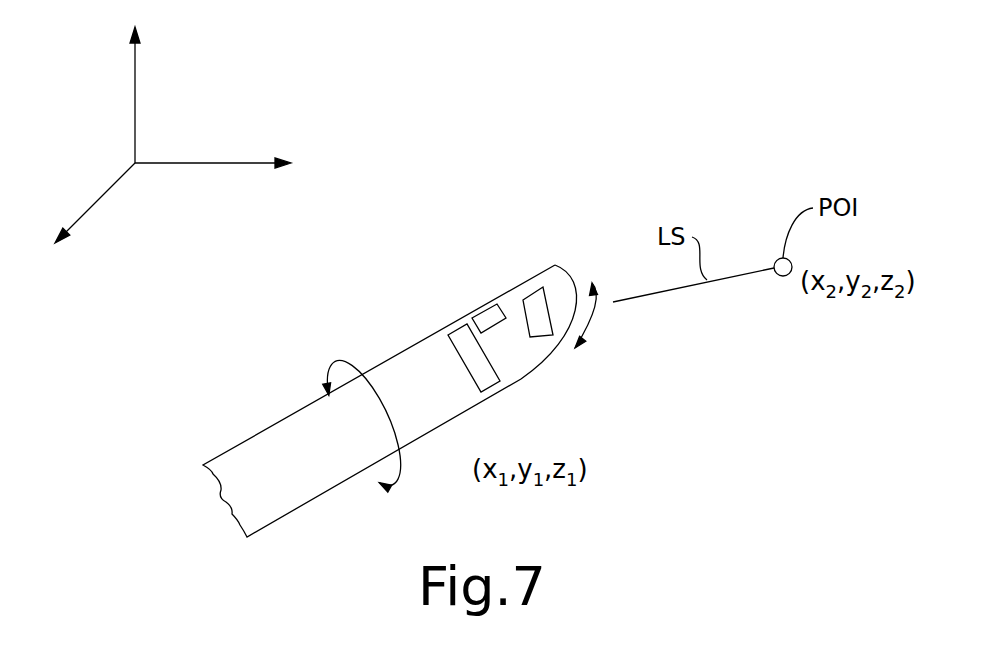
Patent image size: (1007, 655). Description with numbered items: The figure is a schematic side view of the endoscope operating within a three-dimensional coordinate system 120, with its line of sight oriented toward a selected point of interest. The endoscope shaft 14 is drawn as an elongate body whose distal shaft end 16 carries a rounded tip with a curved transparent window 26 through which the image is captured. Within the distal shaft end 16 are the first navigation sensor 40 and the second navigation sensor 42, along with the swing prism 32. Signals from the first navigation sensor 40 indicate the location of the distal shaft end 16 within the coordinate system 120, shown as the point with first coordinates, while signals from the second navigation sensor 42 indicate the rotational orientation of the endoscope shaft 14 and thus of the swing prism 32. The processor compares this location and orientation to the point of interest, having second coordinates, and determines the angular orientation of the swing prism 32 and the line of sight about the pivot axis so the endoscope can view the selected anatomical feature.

The three-dimensional coordinate system 120 is at (130, 161).
The distal shaft end 16 is at (392, 253).
The endoscope shaft 14 is at (262, 431).
The first navigation sensor 40 is at (452, 342).
The second navigation sensor 42 is at (488, 307).
The swing prism 32 is at (537, 292).
The curved transparent window 26 is at (558, 350).